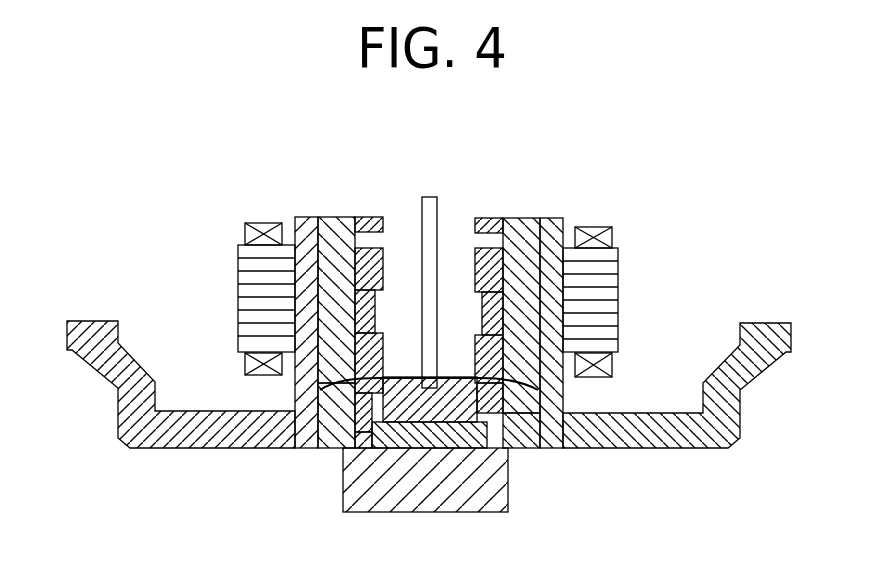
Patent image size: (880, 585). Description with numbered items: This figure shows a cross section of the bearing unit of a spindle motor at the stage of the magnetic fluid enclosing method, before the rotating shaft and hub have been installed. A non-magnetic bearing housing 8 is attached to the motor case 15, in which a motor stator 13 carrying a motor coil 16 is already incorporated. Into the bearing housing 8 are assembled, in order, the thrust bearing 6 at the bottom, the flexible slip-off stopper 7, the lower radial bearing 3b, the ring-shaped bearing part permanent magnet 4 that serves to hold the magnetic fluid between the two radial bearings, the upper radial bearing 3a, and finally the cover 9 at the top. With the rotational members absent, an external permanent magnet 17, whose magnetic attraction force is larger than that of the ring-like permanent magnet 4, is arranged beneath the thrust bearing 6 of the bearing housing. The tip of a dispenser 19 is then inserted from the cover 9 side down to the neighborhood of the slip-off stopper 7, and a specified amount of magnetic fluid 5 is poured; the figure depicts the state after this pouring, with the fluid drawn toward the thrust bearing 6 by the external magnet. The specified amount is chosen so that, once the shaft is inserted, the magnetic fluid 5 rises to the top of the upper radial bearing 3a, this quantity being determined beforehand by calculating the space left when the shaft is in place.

The radial bearing 3a is at (490, 268).
The radial bearing 3b is at (487, 362).
The bearing part permanent magnet 4 is at (490, 310).
The magnetic fluid 5 is at (447, 390).
The thrust bearing 6 is at (335, 420).
The slip-off stopper 7 is at (320, 390).
The bearing housing 8 is at (338, 220).
The cover 9 is at (373, 217).
The motor stator 13 is at (252, 295).
The motor case 15 is at (172, 438).
The motor coil 16 is at (247, 360).
The external permanent magnet 17 is at (422, 495).
The dispenser 19 is at (430, 197).